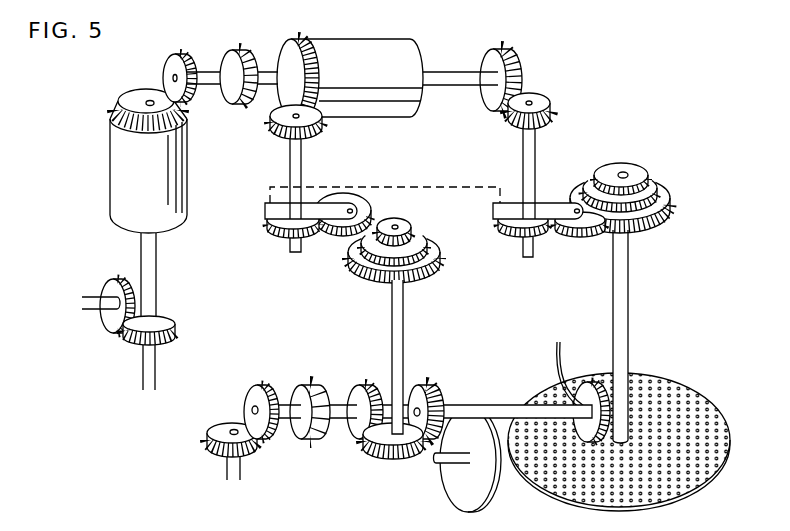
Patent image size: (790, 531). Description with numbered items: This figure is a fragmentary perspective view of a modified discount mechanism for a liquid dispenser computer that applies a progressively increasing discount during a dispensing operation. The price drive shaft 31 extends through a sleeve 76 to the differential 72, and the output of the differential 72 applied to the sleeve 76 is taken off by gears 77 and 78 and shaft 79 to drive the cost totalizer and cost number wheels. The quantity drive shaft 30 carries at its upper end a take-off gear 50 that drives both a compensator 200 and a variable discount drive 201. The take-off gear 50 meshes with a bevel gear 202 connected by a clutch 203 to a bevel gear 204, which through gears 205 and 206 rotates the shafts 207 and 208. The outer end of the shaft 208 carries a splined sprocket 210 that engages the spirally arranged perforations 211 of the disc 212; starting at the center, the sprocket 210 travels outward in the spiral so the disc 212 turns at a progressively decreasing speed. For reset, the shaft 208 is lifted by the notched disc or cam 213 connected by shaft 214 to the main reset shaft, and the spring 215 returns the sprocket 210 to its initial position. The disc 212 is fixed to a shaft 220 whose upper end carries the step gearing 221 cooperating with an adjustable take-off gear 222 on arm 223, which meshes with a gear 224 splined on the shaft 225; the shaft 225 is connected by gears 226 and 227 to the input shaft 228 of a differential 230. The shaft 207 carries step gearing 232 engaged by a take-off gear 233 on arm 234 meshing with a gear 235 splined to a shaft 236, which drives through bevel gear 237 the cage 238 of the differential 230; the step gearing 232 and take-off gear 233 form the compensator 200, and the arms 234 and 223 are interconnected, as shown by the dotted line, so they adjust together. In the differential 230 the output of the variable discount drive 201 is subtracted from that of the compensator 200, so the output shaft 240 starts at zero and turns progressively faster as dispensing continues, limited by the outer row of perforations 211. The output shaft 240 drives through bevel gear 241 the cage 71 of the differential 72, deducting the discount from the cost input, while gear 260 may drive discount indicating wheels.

The quantity drive shaft 30 is at (227, 470).
The price drive shaft 31 is at (158, 371).
The take-off gear 50 is at (209, 437).
The cage of the differential 71 is at (111, 133).
The differential 72 is at (109, 166).
The sleeve 76 is at (160, 278).
The gear 77 is at (172, 330).
The gear 78 is at (122, 272).
The shaft 79 is at (84, 297).
The compensator 200 is at (356, 281).
The variable discount drive 201 is at (637, 302).
The bevel gear 202 is at (243, 410).
The clutch 203 is at (298, 388).
The bevel gear 204 is at (361, 380).
The gear 205 is at (384, 452).
The gear 206 is at (428, 392).
The shaft 207 is at (404, 327).
The shaft 208 is at (490, 404).
The sprocket 210 is at (586, 382).
The perforations 211 is at (648, 390).
The disc 212 is at (572, 495).
The notched disc or cam 213 is at (456, 501).
The shaft 214 is at (444, 462).
The spring 215 is at (555, 362).
The shaft 220 is at (629, 312).
The step gearing or cone of gears 221 is at (655, 178).
The adjustable take-off gear 222 is at (577, 242).
The arm 223 is at (494, 222).
The gear 224 is at (521, 246).
The shaft 225 is at (536, 152).
The gear 226 is at (546, 106).
The gear 227 is at (511, 62).
The input shaft 228 is at (451, 70).
The differential 230 is at (373, 41).
The step gearing or cone of gears 232 is at (426, 246).
The take-off gear 233 is at (373, 210).
The arm 234 is at (265, 210).
The gear 235 is at (278, 233).
The shaft 236 is at (303, 170).
The bevel gear 237 is at (284, 132).
The cage of the differential 238 is at (359, 113).
The output shaft 240 is at (214, 70).
The bevel gear 241 is at (184, 53).
The gear 260 is at (237, 105).